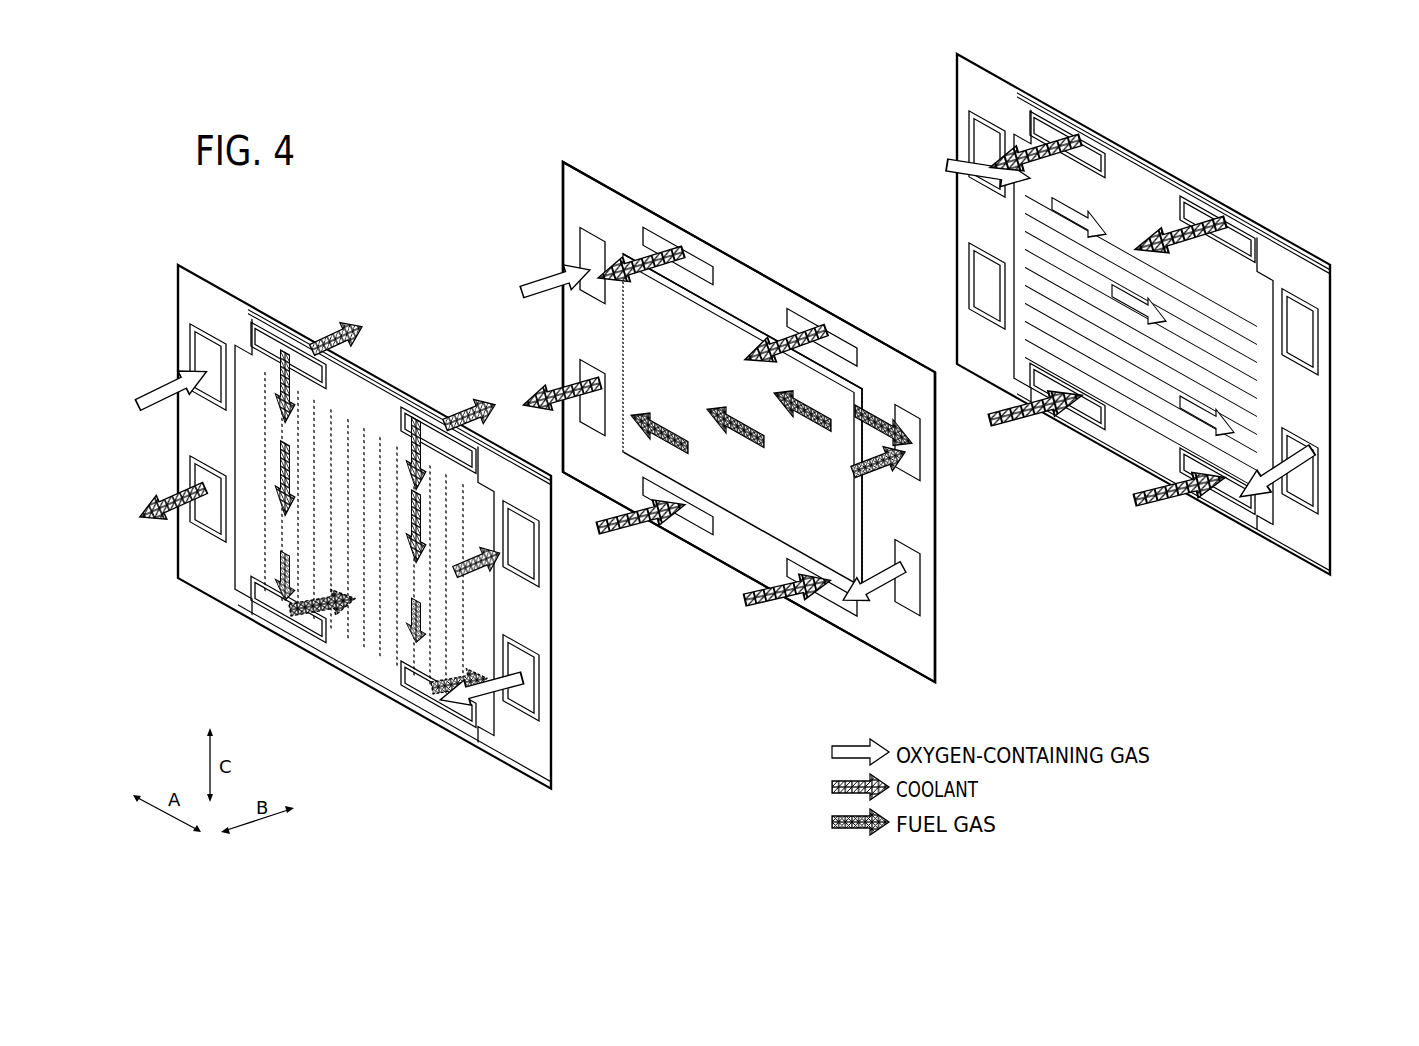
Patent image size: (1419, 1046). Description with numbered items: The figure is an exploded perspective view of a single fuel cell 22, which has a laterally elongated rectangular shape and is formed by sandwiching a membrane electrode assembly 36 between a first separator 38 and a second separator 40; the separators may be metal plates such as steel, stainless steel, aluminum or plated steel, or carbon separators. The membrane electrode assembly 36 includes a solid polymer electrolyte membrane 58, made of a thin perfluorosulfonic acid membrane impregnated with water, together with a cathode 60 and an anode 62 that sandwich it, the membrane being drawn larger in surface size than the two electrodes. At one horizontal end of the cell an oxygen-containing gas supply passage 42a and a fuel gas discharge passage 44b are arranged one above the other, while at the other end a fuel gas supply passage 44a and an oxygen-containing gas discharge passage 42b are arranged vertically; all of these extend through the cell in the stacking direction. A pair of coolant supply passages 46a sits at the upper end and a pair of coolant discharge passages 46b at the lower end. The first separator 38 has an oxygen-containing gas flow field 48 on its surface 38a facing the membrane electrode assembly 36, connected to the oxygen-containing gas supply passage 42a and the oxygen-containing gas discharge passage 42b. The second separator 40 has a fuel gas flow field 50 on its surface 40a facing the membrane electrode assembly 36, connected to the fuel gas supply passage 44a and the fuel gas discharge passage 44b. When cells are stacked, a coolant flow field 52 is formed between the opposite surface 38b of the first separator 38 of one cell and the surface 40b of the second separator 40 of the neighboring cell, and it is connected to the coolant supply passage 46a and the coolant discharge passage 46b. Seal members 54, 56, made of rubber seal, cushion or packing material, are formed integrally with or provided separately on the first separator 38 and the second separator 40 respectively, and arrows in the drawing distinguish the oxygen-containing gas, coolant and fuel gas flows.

The fuel cell 22 is at (373, 219).
The membrane electrode assembly 36 is at (560, 176).
The first separator 38 is at (955, 72).
The second separator 40 is at (176, 284).
The surface of the first separator 38a is at (1275, 525).
The surface of the first separator 38b is at (1330, 548).
The surface of the second separator 40a is at (535, 760).
The surface of the second separator 40b is at (492, 735).
The oxygen-containing gas supply passage 42a is at (203, 352).
The oxygen-containing gas discharge passage 42b is at (525, 697).
The fuel gas supply passage 44a is at (525, 570).
The fuel gas discharge passage 44b is at (203, 490).
The coolant supply passage 46a is at (288, 330).
The coolant discharge passage 46b is at (305, 640).
The oxygen-containing gas flow field 48 is at (1130, 215).
The fuel gas flow field 50 is at (458, 500).
The coolant flow field 52 is at (280, 540).
The seal member 54 is at (1175, 185).
The seal member 56 is at (388, 388).
The solid polymer electrolyte membrane 58 is at (928, 648).
The cathode 60 is at (712, 330).
The anode 62 is at (738, 355).